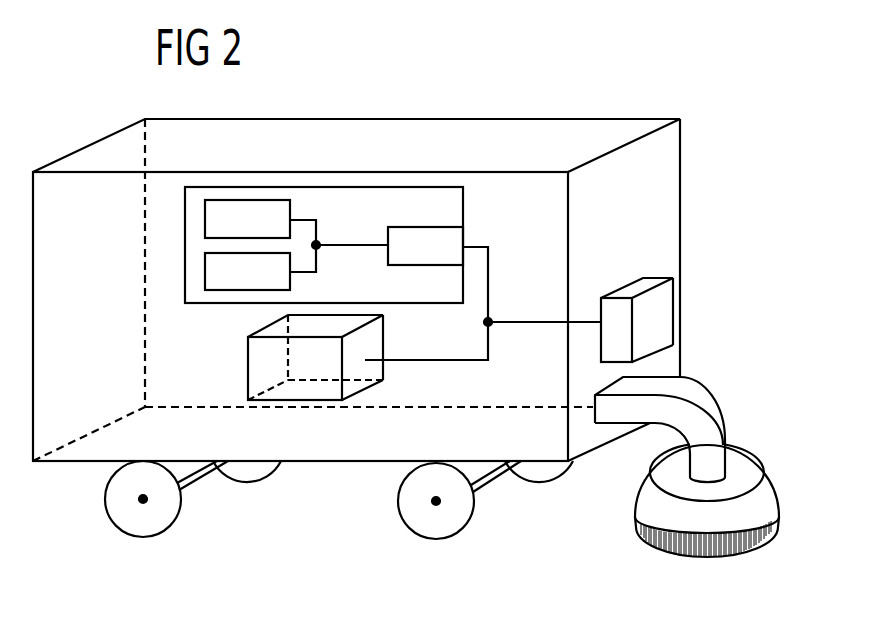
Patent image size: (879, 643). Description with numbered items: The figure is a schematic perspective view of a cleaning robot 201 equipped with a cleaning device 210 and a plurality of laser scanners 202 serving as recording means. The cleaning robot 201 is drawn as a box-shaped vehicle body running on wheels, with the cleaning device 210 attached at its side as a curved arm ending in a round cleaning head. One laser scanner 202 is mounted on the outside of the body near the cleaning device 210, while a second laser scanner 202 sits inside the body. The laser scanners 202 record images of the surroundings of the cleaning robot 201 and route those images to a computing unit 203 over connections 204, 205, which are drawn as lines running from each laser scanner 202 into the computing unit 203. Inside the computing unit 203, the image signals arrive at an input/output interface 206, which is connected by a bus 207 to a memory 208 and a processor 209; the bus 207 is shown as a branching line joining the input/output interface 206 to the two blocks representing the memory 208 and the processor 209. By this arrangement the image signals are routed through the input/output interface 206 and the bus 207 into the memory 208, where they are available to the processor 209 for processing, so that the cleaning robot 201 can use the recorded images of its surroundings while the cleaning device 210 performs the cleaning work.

The cleaning robot 201 is at (692, 150).
The laser scanner 202 is at (247, 370).
The computing unit 203 is at (456, 207).
The connection 204 is at (428, 361).
The connection 205 is at (523, 325).
The input/output interface 206 is at (422, 224).
The bus 207 is at (317, 233).
The memory 208 is at (247, 208).
The processor 209 is at (230, 283).
The cleaning device 210 is at (749, 462).